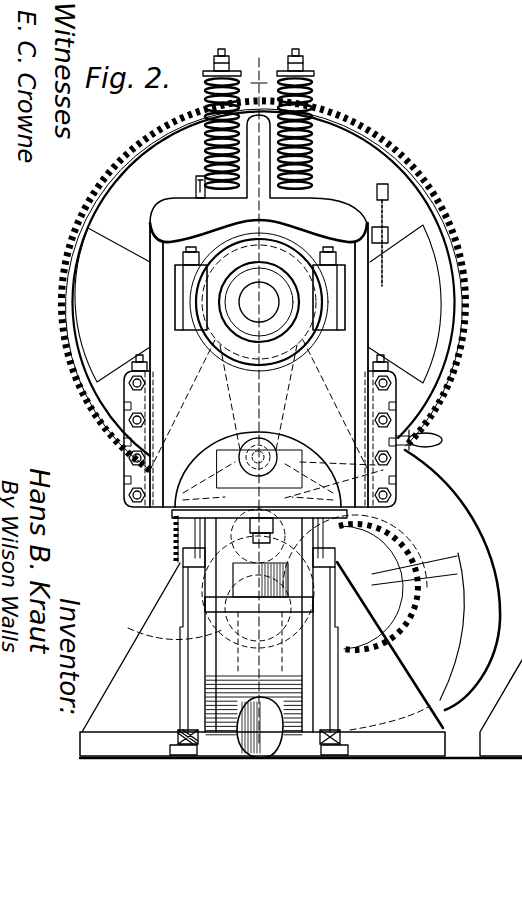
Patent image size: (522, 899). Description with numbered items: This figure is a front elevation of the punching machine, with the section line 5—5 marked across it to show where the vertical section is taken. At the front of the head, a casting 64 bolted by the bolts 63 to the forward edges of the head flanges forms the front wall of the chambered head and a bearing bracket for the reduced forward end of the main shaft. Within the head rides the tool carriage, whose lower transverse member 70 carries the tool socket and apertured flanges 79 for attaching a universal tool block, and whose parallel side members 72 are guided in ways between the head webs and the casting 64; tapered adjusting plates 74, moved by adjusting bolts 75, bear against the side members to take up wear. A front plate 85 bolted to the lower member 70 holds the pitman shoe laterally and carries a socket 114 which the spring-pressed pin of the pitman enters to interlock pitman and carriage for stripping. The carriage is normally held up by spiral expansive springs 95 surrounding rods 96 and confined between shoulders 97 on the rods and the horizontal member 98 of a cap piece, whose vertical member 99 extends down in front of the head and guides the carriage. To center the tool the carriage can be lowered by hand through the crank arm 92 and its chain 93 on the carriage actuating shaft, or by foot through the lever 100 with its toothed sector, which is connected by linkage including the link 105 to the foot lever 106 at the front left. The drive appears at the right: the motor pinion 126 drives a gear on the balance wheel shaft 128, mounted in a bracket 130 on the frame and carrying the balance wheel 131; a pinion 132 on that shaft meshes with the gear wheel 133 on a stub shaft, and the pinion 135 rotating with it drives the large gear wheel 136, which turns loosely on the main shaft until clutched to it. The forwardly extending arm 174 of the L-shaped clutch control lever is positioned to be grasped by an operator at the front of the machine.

The section line 5— 5 is at (259, 392).
The bolts 63 is at (128, 459).
The casting 64 is at (259, 351).
The lower transverse member 70 is at (205, 522).
The side members 72 is at (150, 306).
The tapered adjusting plates 74 is at (126, 430).
The adjusting bolts 75 is at (135, 365).
The apertured flanges 79 is at (195, 512).
The front plate 85 is at (232, 477).
The crank arm 92 is at (377, 192).
The chain 93 is at (388, 266).
The spiral expansive springs 95 is at (205, 103).
The rods 96 is at (221, 49).
The shoulders 97 is at (296, 49).
The horizontal member 98 is at (196, 194).
The vertical member 99 is at (149, 247).
The lever 100 is at (205, 200).
The link 105 is at (186, 663).
The foot lever 106 is at (184, 730).
The socket 114 is at (252, 448).
The pinion 126 is at (254, 700).
The balance wheel shaft 128 is at (410, 582).
The bracket 130 is at (400, 562).
The balance wheel 131 is at (456, 503).
The pinion 132 is at (400, 534).
The gear wheel 133 is at (177, 560).
The pinion 135 is at (320, 472).
The large gear wheel 136 is at (66, 365).
The arm 174 is at (416, 448).